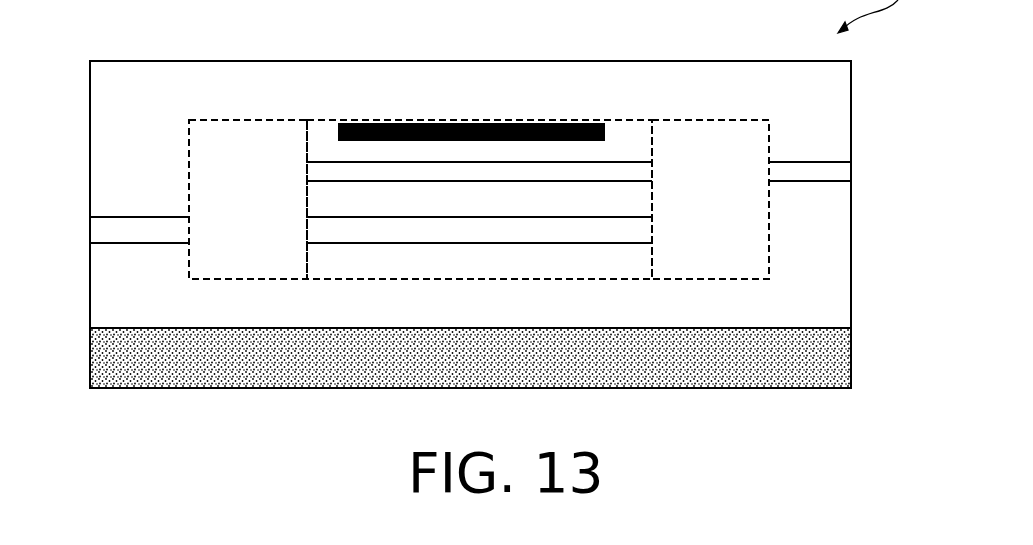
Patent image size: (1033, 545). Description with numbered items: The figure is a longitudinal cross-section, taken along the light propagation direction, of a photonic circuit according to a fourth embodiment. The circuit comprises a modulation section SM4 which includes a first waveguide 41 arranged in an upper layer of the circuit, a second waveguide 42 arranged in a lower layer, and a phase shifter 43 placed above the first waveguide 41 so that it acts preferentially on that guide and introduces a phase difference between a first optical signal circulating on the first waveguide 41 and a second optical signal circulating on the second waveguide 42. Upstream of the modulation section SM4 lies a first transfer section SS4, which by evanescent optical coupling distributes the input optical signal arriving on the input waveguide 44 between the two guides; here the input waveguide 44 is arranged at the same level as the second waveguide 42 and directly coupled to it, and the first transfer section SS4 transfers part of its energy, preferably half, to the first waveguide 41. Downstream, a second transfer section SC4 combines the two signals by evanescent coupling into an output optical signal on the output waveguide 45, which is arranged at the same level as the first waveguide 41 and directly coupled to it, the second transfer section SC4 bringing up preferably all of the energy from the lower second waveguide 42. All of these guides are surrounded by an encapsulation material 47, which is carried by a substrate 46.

The first waveguide 41 is at (615, 181).
The second waveguide 42 is at (580, 228).
The phase shifter 43 is at (511, 123).
The input waveguide 44 is at (125, 228).
The output waveguide 45 is at (835, 170).
The substrate 46 is at (160, 375).
The encapsulation material 47 is at (833, 278).
The first transfer section SS4 is at (187, 256).
The modulation section SM4 is at (357, 283).
The second transfer section SC4 is at (722, 280).